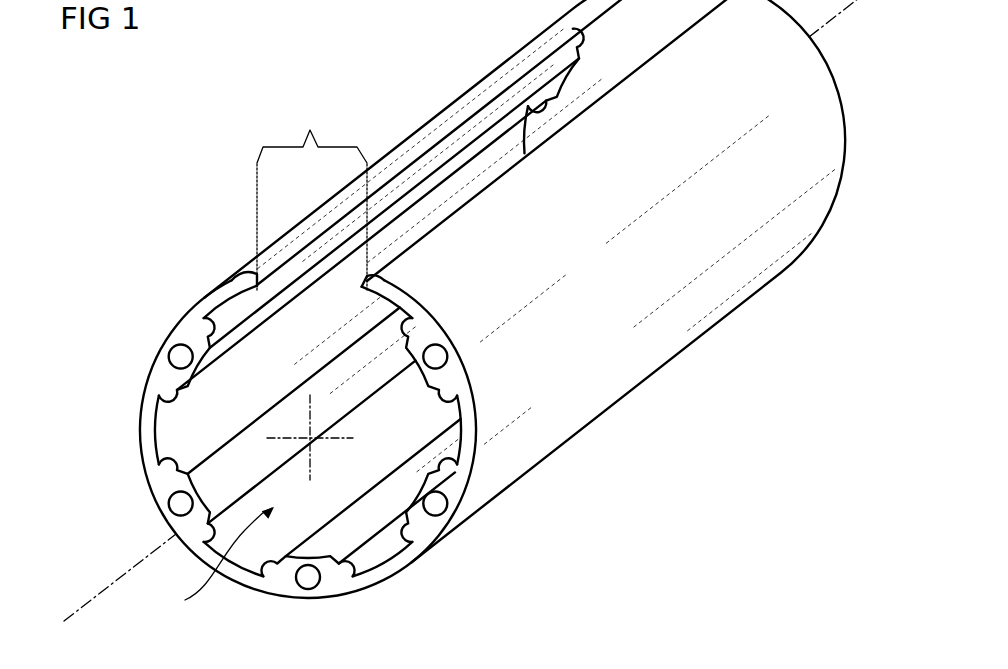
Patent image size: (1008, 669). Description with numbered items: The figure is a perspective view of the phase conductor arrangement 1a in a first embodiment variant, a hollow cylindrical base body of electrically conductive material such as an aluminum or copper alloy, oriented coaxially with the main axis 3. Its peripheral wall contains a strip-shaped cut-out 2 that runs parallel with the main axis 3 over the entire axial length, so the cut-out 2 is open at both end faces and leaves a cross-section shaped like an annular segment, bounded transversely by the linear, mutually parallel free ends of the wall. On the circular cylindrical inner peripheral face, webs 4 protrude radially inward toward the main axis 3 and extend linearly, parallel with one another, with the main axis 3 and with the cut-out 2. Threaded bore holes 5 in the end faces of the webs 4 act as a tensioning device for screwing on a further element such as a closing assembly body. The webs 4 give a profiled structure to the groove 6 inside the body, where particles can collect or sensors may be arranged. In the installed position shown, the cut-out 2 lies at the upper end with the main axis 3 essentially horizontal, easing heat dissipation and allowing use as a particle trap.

The phase conductor arrangement 1a is at (476, 414).
The cut-out 2 is at (484, 145).
The main axis 3 is at (80, 612).
The webs 4 is at (165, 393).
The threaded bore holes 5 is at (168, 353).
The groove 6 is at (219, 561).